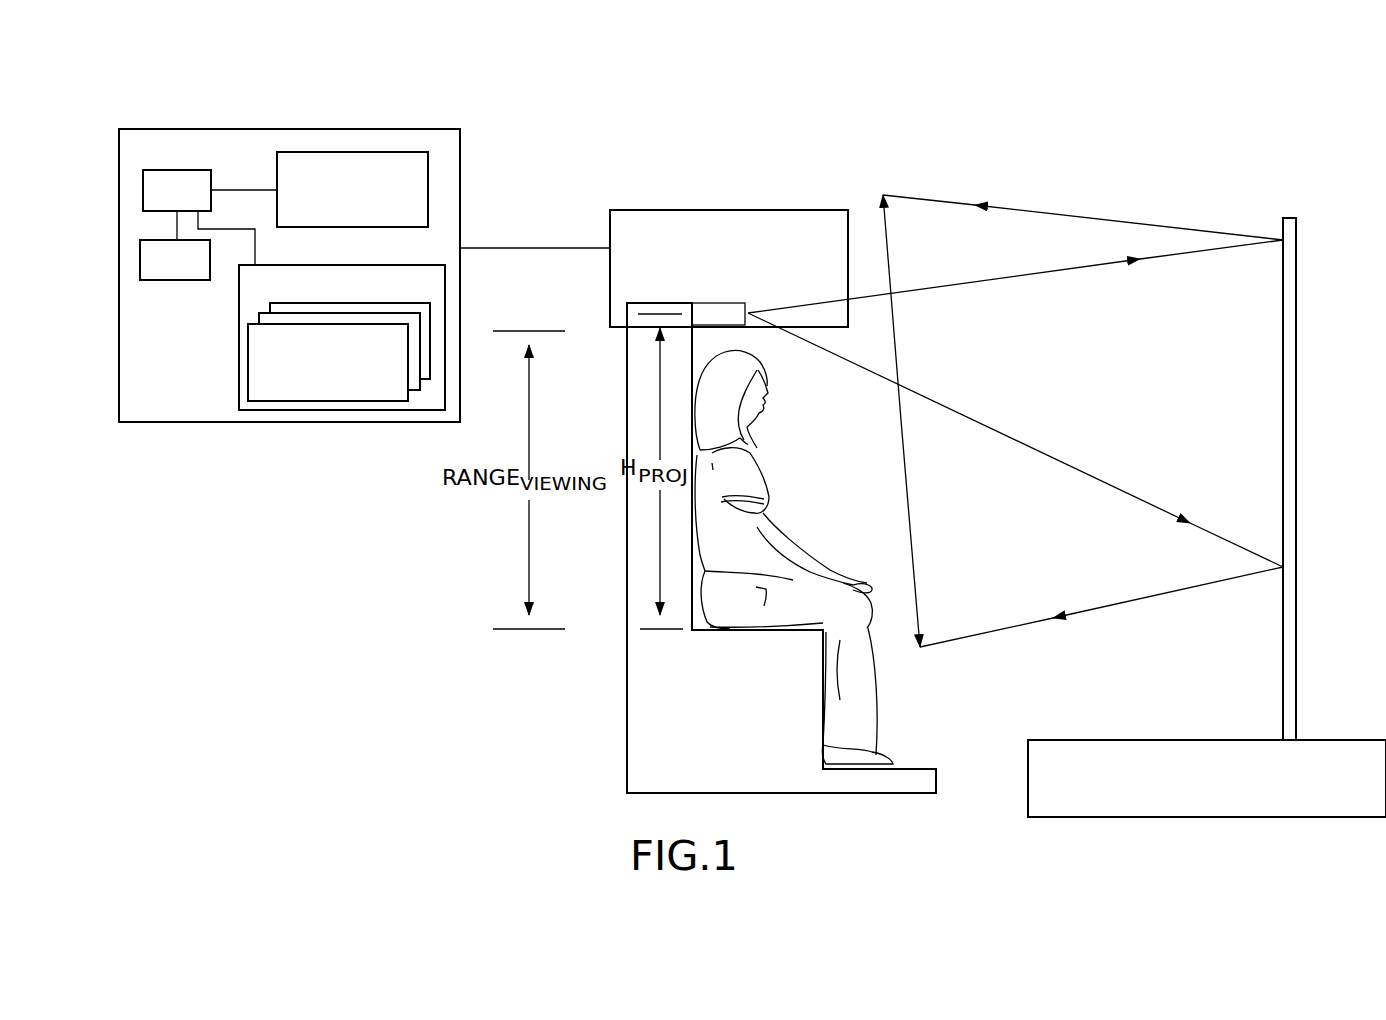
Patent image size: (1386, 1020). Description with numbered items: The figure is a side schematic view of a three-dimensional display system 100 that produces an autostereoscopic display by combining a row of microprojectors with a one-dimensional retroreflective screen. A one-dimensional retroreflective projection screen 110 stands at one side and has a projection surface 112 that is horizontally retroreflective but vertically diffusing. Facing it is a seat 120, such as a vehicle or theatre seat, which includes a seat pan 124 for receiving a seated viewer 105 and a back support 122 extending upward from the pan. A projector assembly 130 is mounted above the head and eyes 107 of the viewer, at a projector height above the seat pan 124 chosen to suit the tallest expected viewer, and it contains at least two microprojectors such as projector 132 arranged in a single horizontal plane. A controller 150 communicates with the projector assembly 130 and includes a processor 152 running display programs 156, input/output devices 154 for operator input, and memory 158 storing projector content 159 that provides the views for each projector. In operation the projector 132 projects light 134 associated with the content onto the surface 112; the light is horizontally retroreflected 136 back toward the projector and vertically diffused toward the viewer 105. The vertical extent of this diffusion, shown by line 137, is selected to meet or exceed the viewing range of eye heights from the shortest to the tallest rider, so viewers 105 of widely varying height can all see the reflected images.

The 3D display system 100 is at (248, 127).
The viewer 105 is at (772, 512).
The viewer's eyes 107 is at (772, 395).
The 1D retroreflective projection screen 110 is at (1305, 208).
The projection surface 112 is at (1280, 228).
The seat 120 is at (616, 781).
The back support 122 is at (636, 580).
The seat pan 124 is at (860, 620).
The projector assembly 130 is at (681, 210).
The projector 132 is at (755, 328).
The projected light 134 is at (835, 352).
The retroreflected light 136 is at (1122, 600).
The vertical diffusion line 137 is at (914, 562).
The controller 150 is at (172, 424).
The processor 152 is at (143, 190).
The input/output devices 154 is at (140, 263).
The display programs 156 is at (393, 151).
The memory 158 is at (440, 265).
The projector content 159 is at (348, 410).